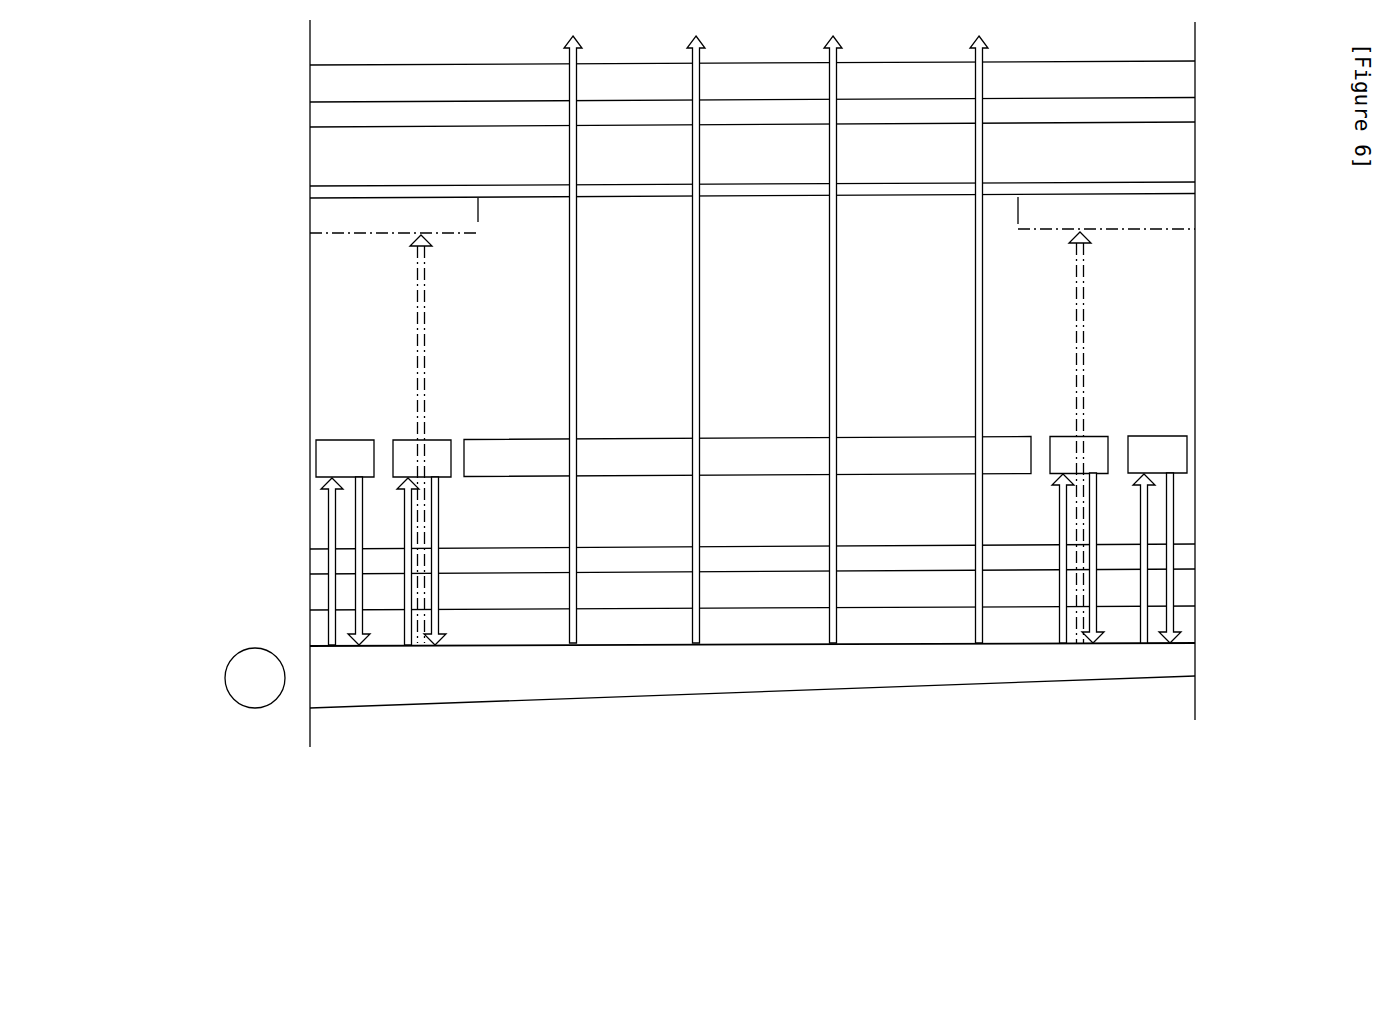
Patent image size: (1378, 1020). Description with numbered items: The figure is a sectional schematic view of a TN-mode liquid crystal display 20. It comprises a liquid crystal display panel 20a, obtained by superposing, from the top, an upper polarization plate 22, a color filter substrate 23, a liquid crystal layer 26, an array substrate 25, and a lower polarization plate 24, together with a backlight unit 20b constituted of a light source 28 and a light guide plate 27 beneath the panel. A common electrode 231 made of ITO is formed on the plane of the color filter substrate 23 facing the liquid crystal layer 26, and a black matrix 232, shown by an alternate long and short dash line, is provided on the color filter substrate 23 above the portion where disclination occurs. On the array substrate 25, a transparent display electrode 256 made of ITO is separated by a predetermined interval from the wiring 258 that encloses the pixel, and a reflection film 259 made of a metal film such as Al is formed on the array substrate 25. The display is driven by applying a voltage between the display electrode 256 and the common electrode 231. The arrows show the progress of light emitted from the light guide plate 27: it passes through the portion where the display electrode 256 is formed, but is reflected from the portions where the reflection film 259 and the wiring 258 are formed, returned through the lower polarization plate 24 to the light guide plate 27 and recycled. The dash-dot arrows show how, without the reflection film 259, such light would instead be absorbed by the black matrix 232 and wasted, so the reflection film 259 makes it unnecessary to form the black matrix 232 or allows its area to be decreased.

The liquid crystal display 20 is at (714, 710).
The liquid crystal display panel 20a is at (238, 68).
The backlight unit 20b is at (363, 755).
The upper polarization plate 22 is at (310, 92).
The color filter substrate 23 is at (298, 127).
The common electrode 231 is at (430, 192).
The black matrix 232 is at (387, 236).
The lower polarization plate 24 is at (310, 600).
The array substrate 25 is at (298, 442).
The display electrode 256 is at (893, 436).
The wiring 258 is at (355, 440).
The reflection film 259 is at (440, 440).
The liquid crystal layer 26 is at (310, 324).
The light guide plate 27 is at (342, 690).
The light source 28 is at (253, 700).